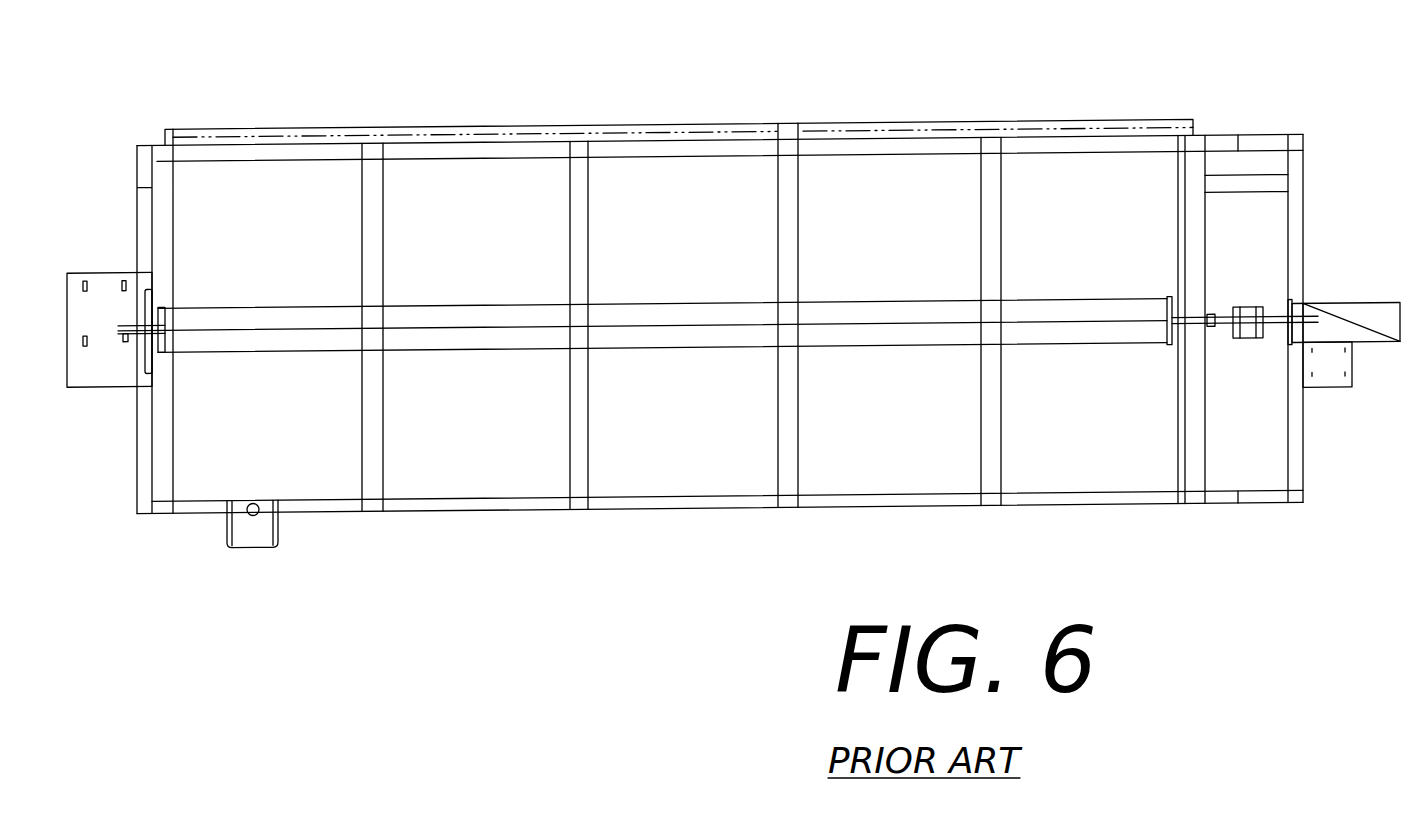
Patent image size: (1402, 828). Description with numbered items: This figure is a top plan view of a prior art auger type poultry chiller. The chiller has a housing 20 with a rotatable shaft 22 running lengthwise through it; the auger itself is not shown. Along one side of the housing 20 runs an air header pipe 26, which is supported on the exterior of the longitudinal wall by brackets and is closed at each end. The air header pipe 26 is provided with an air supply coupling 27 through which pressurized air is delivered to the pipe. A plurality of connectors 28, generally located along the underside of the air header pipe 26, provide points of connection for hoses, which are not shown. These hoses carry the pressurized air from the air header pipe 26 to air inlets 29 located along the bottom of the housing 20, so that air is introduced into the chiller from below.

The housing 20 is at (638, 473).
The rotatable shaft 22 is at (497, 310).
The air header pipe 26 is at (925, 130).
The air supply coupling 27 is at (790, 130).
The connectors 28 is at (262, 130).
The air inlets 29 is at (320, 247).